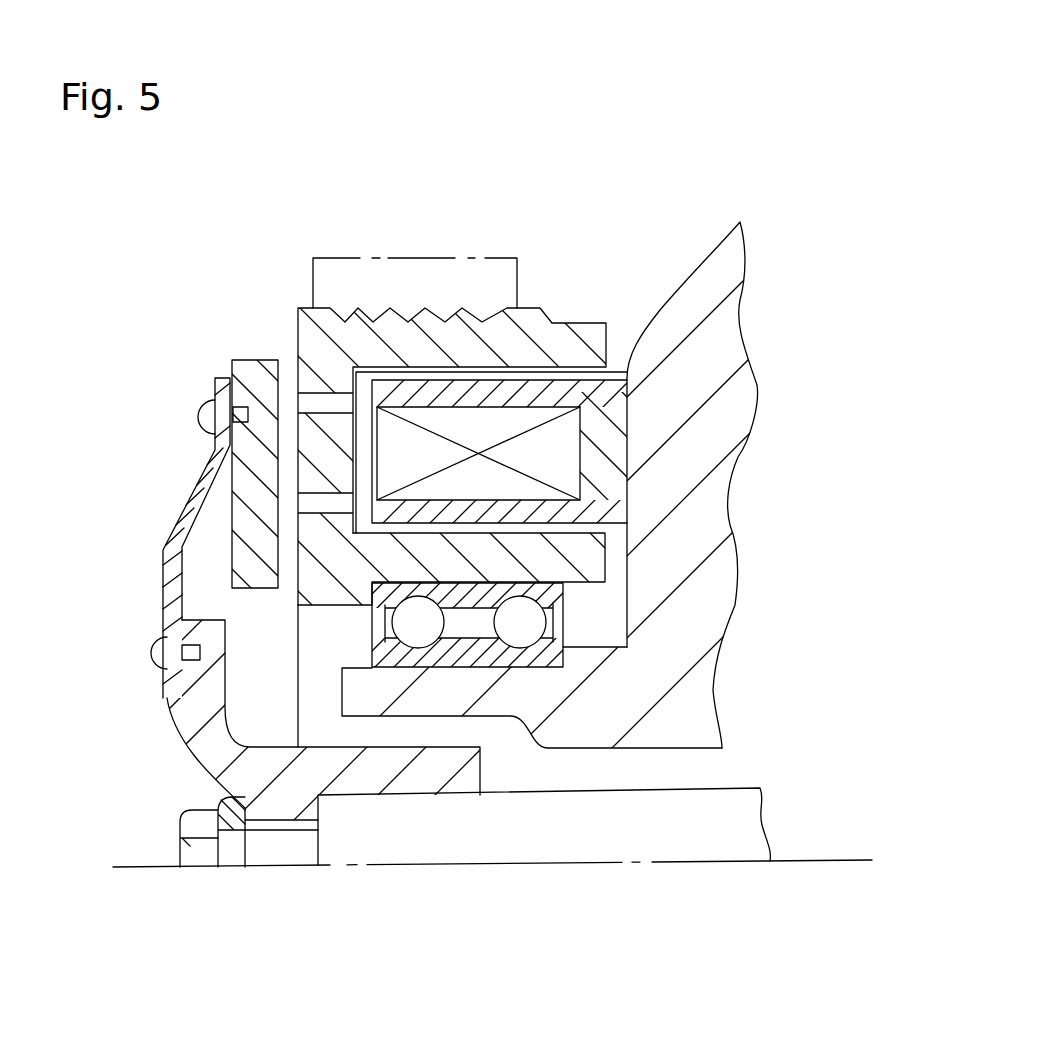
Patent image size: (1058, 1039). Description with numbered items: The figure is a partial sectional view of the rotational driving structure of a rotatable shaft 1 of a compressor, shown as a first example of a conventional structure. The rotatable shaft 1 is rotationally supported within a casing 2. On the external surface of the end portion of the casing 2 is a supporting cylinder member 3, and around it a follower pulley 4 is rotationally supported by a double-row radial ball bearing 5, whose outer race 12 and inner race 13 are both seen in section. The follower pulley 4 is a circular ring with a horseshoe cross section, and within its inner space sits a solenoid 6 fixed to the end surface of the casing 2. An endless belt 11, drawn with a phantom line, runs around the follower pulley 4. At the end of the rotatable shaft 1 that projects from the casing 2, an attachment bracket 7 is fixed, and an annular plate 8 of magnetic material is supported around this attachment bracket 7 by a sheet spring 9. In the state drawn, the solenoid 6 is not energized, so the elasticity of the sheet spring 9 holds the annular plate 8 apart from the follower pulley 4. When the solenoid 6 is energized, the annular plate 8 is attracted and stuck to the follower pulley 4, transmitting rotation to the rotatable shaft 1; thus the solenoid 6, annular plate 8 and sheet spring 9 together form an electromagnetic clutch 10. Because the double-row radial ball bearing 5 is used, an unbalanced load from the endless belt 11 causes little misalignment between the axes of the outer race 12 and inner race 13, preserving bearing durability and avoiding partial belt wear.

The rotatable shaft 1 is at (527, 850).
The casing 2 is at (727, 358).
The supporting cylinder member 3 is at (423, 700).
The follower pulley 4 is at (368, 343).
The double-row radial ball bearing 5 is at (553, 650).
The solenoid 6 is at (520, 420).
The attachment bracket 7 is at (212, 760).
The annular plate 8 is at (250, 488).
The sheet spring 9 is at (178, 523).
The electromagnetic clutch 10 is at (250, 452).
The endless belt 11 is at (455, 257).
The outer race 12 is at (510, 582).
The inner race 13 is at (392, 660).